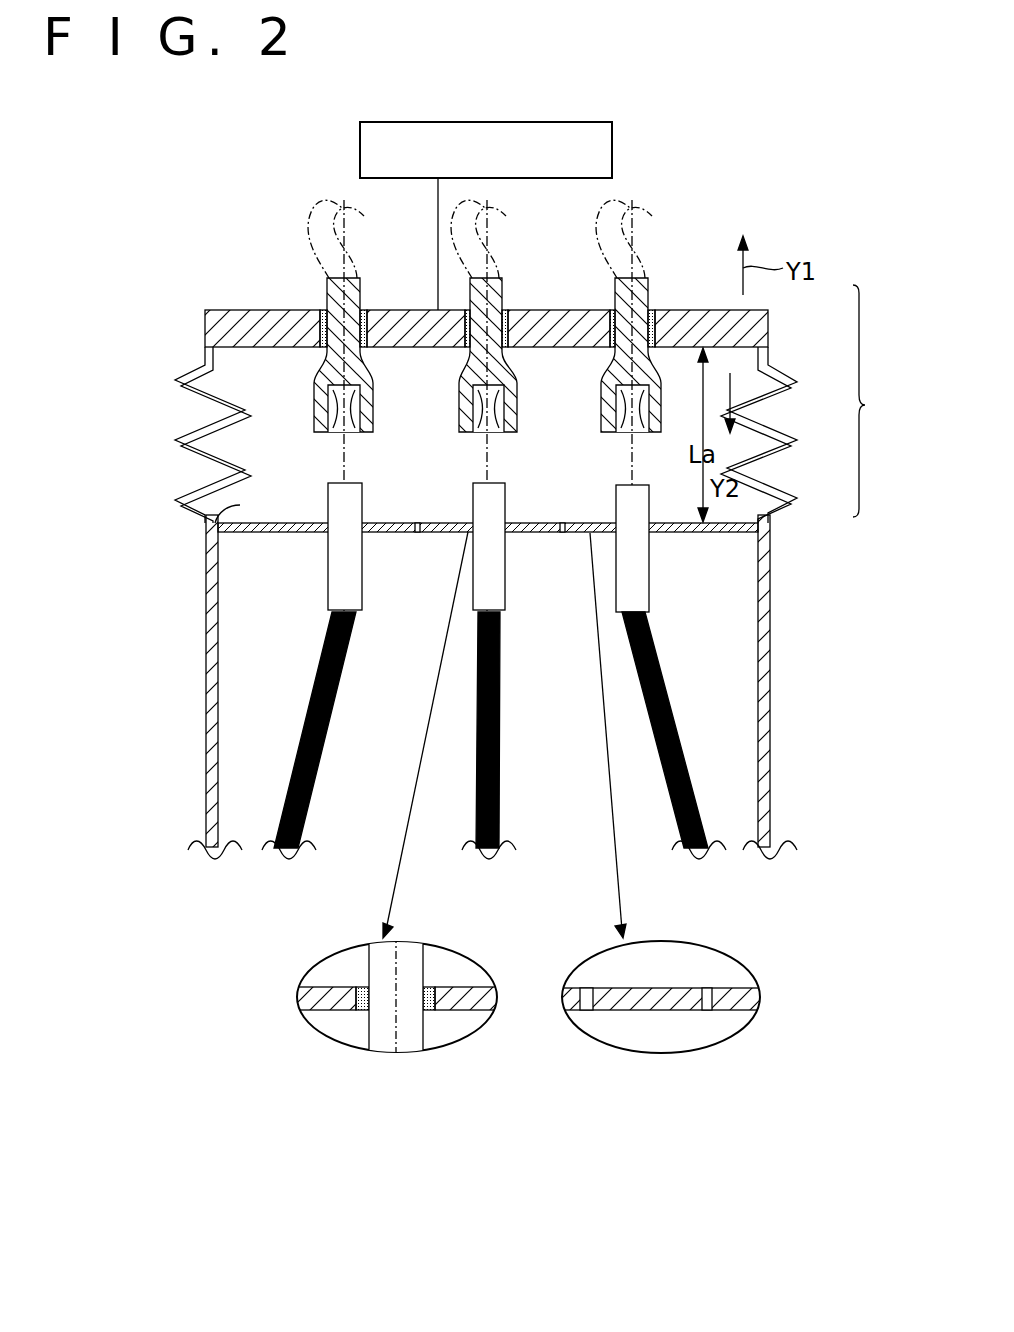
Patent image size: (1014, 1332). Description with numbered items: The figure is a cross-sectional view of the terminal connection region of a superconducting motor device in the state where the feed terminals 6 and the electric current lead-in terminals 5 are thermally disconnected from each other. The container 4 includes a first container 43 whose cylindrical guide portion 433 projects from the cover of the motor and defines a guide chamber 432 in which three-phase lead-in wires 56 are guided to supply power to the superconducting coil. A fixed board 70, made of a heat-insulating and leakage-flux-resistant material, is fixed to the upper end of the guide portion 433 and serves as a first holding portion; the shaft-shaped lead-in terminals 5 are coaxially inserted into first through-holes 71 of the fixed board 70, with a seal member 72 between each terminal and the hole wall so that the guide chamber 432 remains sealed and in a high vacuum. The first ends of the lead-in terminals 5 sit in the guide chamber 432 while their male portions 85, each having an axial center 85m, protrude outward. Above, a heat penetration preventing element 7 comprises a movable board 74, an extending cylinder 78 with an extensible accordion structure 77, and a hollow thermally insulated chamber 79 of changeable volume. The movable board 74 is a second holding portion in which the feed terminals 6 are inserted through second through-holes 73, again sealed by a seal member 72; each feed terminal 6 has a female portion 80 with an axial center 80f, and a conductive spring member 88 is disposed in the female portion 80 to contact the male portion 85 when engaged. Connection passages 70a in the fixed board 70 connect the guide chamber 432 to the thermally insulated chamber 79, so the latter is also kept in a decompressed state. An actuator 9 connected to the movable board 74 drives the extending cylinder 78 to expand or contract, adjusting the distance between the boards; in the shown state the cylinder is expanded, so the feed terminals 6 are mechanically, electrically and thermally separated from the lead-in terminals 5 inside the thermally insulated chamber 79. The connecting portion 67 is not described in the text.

The container 4 is at (470, 687).
The electric current lead-in terminal 5 is at (320, 560).
The feed terminal 6 is at (327, 286).
The heat penetration preventing element 7 is at (492, 422).
The actuator 9 is at (360, 160).
The first container 43 is at (770, 787).
The electric current lead-in wire 56 is at (308, 708).
The connecting portion 67 is at (305, 225).
The fixed board 70 is at (205, 505).
The connection passage 70a is at (420, 533).
The first through-hole 71 is at (363, 533).
The seal member 72 is at (323, 312).
The second through-hole 73 is at (372, 330).
The movable board 74 is at (213, 315).
The extensible accordion structure 77 is at (183, 393).
The extending cylinder 78 is at (178, 377).
The thermally insulated chamber 79 is at (245, 455).
The female portion 80 is at (338, 432).
The axial center of female portion 80f is at (348, 232).
The male portion 85 is at (358, 484).
The axial center of male portion 85m is at (344, 478).
The spring member 88 is at (373, 392).
The guide chamber 432 is at (235, 595).
The guide portion 433 is at (207, 633).